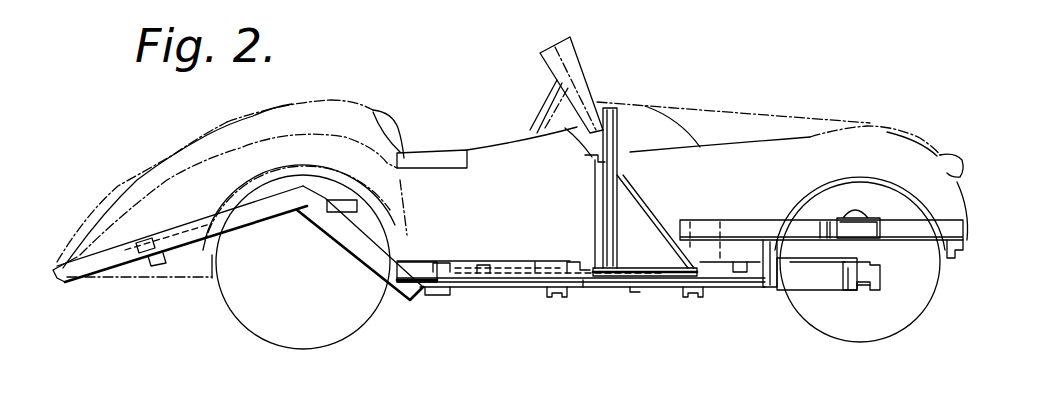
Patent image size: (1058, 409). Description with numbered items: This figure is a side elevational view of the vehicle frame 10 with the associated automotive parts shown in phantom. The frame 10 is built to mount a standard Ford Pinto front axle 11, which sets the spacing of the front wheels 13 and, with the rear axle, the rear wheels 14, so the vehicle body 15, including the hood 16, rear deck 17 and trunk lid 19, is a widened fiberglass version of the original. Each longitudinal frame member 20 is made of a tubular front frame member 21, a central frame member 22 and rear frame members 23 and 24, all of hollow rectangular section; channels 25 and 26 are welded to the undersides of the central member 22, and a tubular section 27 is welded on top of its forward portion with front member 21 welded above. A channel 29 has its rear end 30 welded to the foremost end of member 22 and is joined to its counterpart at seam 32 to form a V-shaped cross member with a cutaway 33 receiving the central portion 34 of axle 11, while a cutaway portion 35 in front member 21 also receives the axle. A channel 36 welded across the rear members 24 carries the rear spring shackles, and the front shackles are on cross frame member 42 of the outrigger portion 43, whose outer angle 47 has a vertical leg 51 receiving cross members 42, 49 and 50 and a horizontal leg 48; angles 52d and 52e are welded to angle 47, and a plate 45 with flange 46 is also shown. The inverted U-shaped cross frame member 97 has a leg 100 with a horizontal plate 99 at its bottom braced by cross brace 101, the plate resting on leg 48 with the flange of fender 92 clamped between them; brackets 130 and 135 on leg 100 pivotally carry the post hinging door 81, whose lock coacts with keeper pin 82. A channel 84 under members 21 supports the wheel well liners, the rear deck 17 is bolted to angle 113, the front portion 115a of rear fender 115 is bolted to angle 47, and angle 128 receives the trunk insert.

The vehicle frame 10 is at (460, 297).
The front axle 11 is at (878, 240).
The front wheels 13 is at (870, 343).
The rear wheels 14 is at (220, 317).
The vehicle body 15 is at (720, 107).
The hood 16 is at (773, 120).
The rear deck 17 is at (340, 98).
The trunk lid 19 is at (153, 162).
The longitudinal frame member 20 is at (484, 268).
The front frame member 21 is at (720, 217).
The central frame member 22 is at (588, 280).
The rear frame member 23 is at (350, 250).
The rear frame member 24 is at (245, 223).
The channel 25 is at (542, 290).
The channel 26 is at (672, 288).
The tubular section 27 is at (692, 232).
The channel 29 is at (805, 280).
The rear end of channel 30 is at (765, 290).
The seam 32 is at (870, 268).
The cutaway 33 is at (853, 281).
The central portion of axle 34 is at (887, 290).
The cutaway portion 35 is at (857, 220).
The channel 36 is at (150, 267).
The outrigger cross frame member 42 is at (436, 258).
The outrigger portion 43 is at (432, 260).
The plate 45 is at (296, 213).
The flange 46 is at (237, 202).
The outer angle 47 is at (633, 289).
The horizontal leg of angle 48 is at (648, 290).
The outrigger cross frame member 49 is at (538, 262).
The outrigger cross frame member 50 is at (722, 223).
The vertical leg of angle 51 is at (452, 262).
The angle 52d is at (478, 290).
The angle 52e is at (578, 290).
The door 81 is at (470, 143).
The keeper pin 82 is at (398, 190).
The channel 84 is at (953, 263).
The fender 92 is at (877, 127).
The inverted U-shaped cross frame member 97 is at (617, 102).
The horizontal plate 99 is at (710, 268).
The leg 100 is at (600, 187).
The cross brace 101 is at (637, 203).
The angle 113 is at (75, 255).
The rear fender 115 is at (275, 111).
The front portion of rear fender 115a is at (420, 290).
The angle 128 is at (142, 242).
The bracket 130 is at (592, 245).
The bracket 135 is at (587, 160).